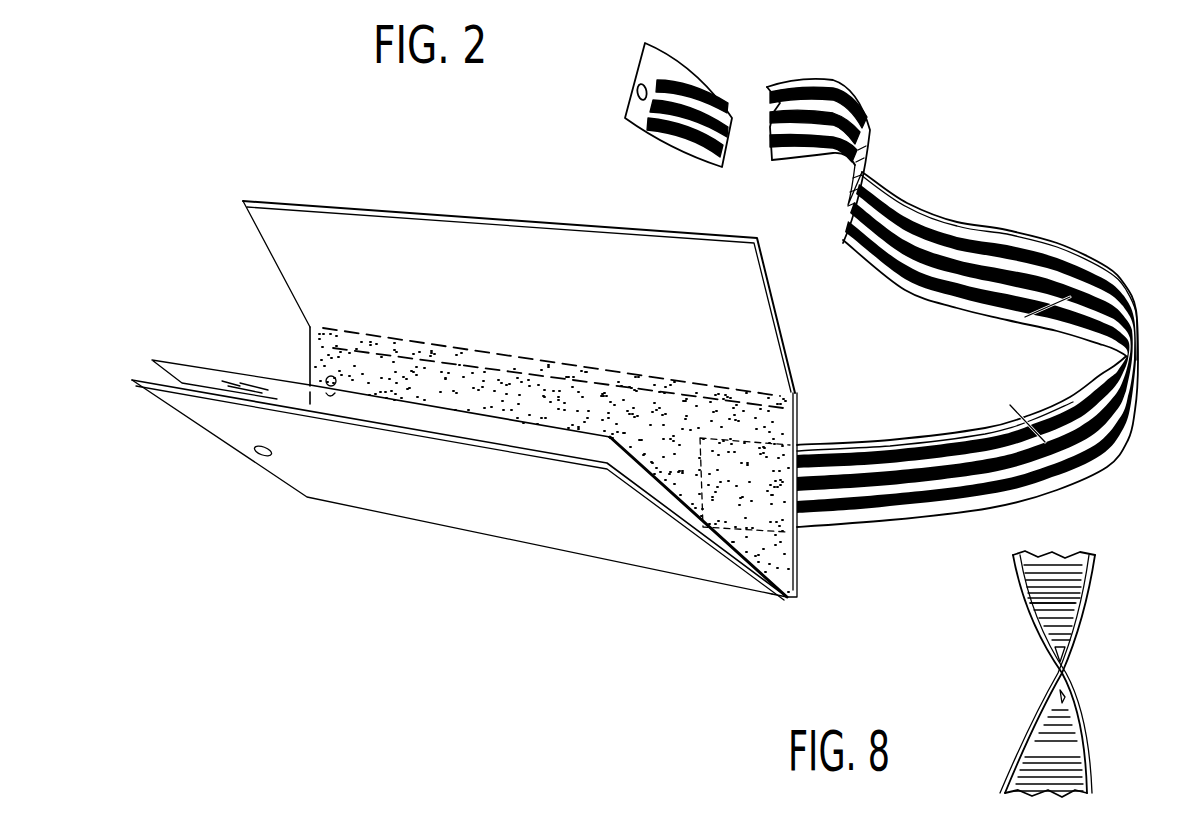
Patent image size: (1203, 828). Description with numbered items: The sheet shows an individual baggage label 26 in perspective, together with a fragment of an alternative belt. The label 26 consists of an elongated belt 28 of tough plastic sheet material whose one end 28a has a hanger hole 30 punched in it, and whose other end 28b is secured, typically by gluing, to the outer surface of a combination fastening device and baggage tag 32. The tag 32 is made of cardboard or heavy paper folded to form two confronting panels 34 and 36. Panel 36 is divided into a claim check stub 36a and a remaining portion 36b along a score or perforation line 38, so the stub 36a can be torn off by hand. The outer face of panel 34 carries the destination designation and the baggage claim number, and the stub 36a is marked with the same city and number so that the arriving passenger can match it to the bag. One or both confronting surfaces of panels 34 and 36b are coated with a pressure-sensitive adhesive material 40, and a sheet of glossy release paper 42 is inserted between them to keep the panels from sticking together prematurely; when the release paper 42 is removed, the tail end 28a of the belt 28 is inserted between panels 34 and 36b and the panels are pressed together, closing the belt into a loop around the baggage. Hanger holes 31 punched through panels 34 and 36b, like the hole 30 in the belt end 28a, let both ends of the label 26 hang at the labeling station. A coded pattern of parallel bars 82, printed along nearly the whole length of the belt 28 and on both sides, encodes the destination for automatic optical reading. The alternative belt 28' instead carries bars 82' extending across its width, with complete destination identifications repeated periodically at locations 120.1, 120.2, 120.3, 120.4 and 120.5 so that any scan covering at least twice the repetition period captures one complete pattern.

In FIG. 2, the baggage label 26 is at (329, 182).
In FIG. 2, the elongated belt 28 is at (952, 303).
In FIG. 2, the belt end 28a is at (627, 117).
In FIG. 2, the belt end 28b is at (800, 542).
In FIG. 2, the hanger hole 30 is at (637, 92).
In FIG. 2, the hanger holes 31 is at (330, 378).
In FIG. 2, the combination fastening device and baggage tag 32 is at (771, 601).
In FIG. 2, the panel 34 is at (213, 432).
In FIG. 2, the panel 36 is at (304, 333).
In FIG. 2, the claim check stub 36a is at (280, 246).
In FIG. 2, the panel portion 36b is at (797, 405).
In FIG. 2, the score or perforation line 38 is at (740, 384).
In FIG. 2, the pressure-sensitive adhesive material 40 is at (600, 388).
In FIG. 2, the release paper 42 is at (180, 362).
In FIG. 2, the parallel bars 82 is at (1008, 369).
In FIG. 8, the plastic belt 28' is at (1091, 674).
In FIG. 8, the bars 82' is at (1100, 565).
In FIG. 8, the data pattern location 120.1 is at (1004, 585).
In FIG. 8, the data pattern location 120.2 is at (1040, 626).
In FIG. 8, the data pattern location 120.3 is at (1060, 692).
In FIG. 8, the data pattern location 120.4 is at (1040, 722).
In FIG. 8, the data pattern location 120.5 is at (1015, 778).